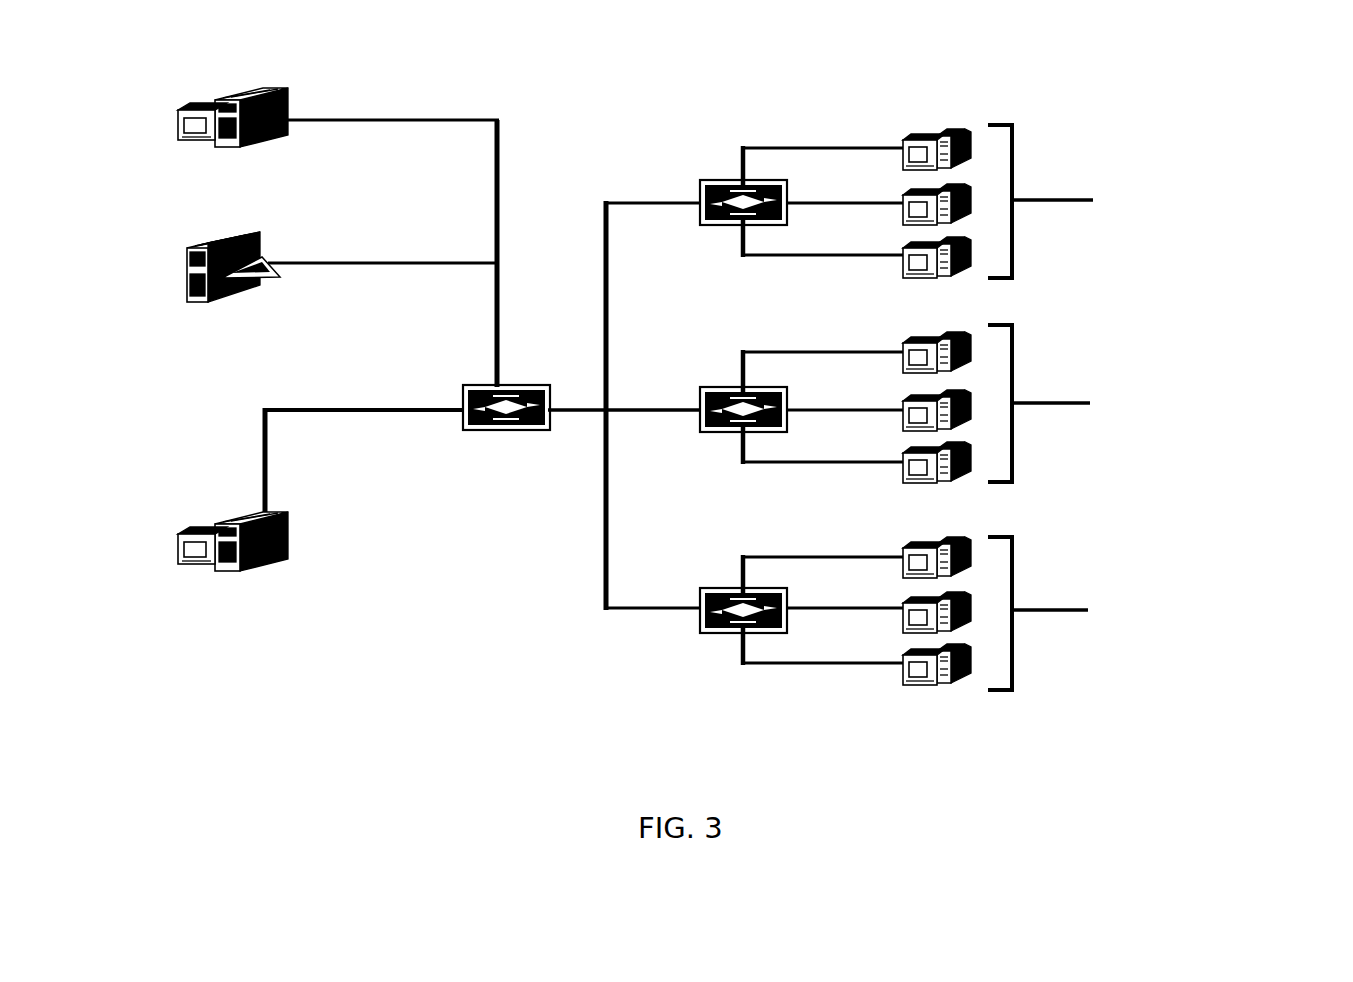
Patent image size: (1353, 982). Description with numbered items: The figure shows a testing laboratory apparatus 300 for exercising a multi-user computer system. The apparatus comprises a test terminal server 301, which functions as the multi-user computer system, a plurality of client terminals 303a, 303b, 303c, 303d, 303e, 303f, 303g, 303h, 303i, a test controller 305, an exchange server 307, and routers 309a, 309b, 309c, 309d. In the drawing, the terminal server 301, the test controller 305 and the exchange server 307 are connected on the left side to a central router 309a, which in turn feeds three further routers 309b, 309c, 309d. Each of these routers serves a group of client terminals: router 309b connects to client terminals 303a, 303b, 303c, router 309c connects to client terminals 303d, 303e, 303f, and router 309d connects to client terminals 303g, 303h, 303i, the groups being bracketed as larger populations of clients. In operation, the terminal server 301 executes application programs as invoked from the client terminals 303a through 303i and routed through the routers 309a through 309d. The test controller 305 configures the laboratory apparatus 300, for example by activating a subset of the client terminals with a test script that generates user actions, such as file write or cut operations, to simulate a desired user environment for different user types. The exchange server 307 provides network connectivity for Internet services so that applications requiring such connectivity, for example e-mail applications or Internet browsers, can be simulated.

The testing laboratory apparatus 300 is at (1126, 69).
The test terminal server 301 is at (288, 520).
The client terminal 303a is at (918, 130).
The client terminal 303b is at (903, 190).
The client terminal 303c is at (910, 278).
The client terminal 303d is at (905, 333).
The client terminal 303e is at (903, 400).
The client terminal 303f is at (920, 483).
The client terminal 303g is at (904, 540).
The client terminal 303h is at (905, 622).
The client terminal 303i is at (925, 685).
The test controller 305 is at (233, 238).
The exchange server 307 is at (272, 88).
The router 309a is at (512, 385).
The router 309b is at (720, 180).
The router 309c is at (728, 387).
The router 309d is at (723, 588).